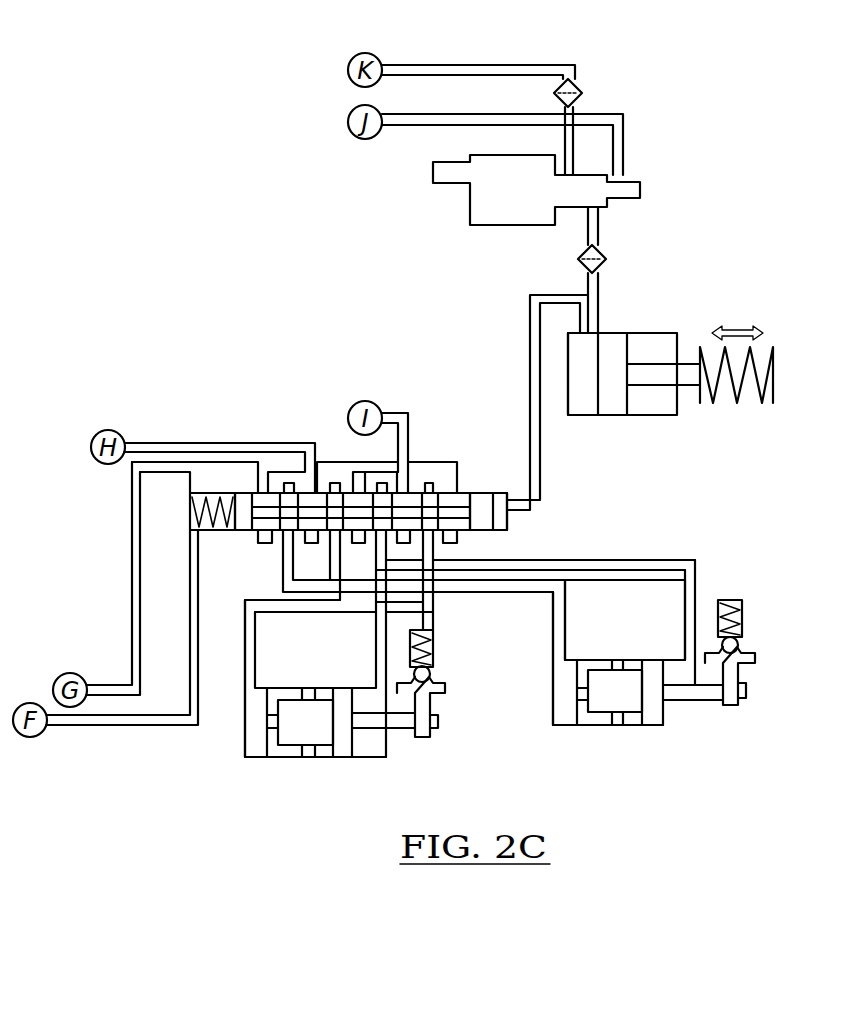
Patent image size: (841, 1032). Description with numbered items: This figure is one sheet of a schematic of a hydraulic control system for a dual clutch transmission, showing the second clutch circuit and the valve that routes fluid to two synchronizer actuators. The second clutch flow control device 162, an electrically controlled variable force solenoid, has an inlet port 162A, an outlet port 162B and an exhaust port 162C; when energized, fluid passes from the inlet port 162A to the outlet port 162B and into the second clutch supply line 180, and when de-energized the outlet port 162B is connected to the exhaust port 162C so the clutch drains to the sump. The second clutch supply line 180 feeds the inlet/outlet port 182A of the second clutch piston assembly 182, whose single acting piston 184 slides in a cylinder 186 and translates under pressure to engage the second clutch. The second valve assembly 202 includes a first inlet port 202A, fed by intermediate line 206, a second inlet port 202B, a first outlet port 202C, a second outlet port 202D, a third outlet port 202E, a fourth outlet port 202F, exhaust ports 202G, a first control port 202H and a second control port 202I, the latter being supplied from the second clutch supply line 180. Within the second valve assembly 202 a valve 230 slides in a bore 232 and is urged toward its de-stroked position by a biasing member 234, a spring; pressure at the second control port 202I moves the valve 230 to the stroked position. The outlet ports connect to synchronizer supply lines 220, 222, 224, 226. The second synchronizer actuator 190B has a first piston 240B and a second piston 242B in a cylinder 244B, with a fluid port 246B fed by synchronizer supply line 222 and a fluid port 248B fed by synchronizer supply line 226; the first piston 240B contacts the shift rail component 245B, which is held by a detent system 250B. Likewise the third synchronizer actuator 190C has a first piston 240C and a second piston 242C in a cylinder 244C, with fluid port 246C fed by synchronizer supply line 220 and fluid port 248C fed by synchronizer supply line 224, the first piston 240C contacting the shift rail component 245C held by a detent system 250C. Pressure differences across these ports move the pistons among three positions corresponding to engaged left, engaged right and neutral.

The second clutch flow control device 162 is at (470, 205).
The inlet port 162A is at (566, 160).
The outlet port 162B is at (599, 225).
The exhaust port 162C is at (621, 170).
The second clutch supply line 180 is at (599, 283).
The second clutch piston assembly 182 is at (637, 354).
The inlet/outlet port 182A is at (587, 330).
The piston 184 is at (648, 375).
The cylinder 186 is at (587, 414).
The second valve assembly 202 is at (359, 460).
The first inlet port 202A is at (318, 462).
The second inlet port 202B is at (398, 462).
The first outlet port 202C is at (290, 535).
The second outlet port 202D is at (290, 580).
The third outlet port 202E is at (377, 575).
The fourth outlet port 202F is at (430, 540).
The exhaust ports 202G is at (265, 493).
The first control port 202H is at (190, 532).
The second control port 202I is at (512, 512).
The intermediate line 206 is at (150, 442).
The synchronizer supply line 220 is at (560, 622).
The synchronizer supply line 222 is at (243, 640).
The synchronizer supply line 224 is at (690, 558).
The synchronizer supply line 226 is at (435, 559).
The valve 230 is at (215, 500).
The bore 232 is at (190, 520).
The biasing member 234 is at (190, 505).
The second synchronizer actuator 190B is at (286, 717).
The third synchronizer actuator 190C is at (646, 698).
The first piston 240B is at (307, 730).
The first piston 240C is at (625, 720).
The second piston 242B is at (287, 746).
The second piston 242C is at (600, 722).
The piston housing or cylinder 244B is at (242, 749).
The piston housing or cylinder 244C is at (560, 712).
The shift rail component 245B is at (440, 722).
The shift rail component 245C is at (748, 695).
The fluid port 246B is at (253, 686).
The fluid port 246C is at (563, 618).
The fluid port 248B is at (380, 686).
The fluid port 248C is at (690, 660).
The detent system 250B is at (433, 673).
The detent system 250C is at (742, 625).